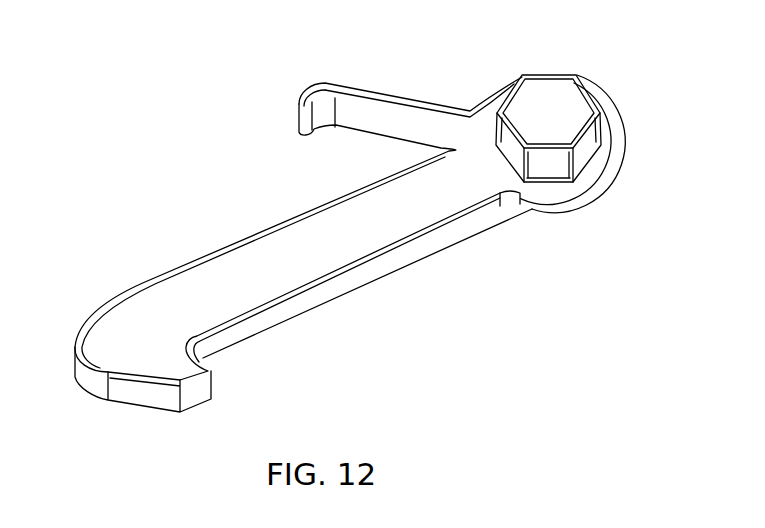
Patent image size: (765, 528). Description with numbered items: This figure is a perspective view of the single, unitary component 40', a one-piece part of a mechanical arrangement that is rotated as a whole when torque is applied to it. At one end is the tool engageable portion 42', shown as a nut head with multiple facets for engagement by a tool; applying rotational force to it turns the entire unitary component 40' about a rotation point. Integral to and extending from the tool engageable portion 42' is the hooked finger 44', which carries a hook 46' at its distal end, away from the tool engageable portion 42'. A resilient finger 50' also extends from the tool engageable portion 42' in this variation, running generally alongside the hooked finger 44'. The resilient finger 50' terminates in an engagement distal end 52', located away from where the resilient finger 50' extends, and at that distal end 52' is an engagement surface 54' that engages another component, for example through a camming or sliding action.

The single, unitary component 40' is at (341, 217).
The tool engageable portion 42' is at (548, 96).
The hooked finger 44' is at (279, 243).
The hook 46' is at (236, 398).
The resilient finger 50' is at (397, 86).
The engagement distal end 52' is at (278, 131).
The engagement surface 54' is at (270, 75).